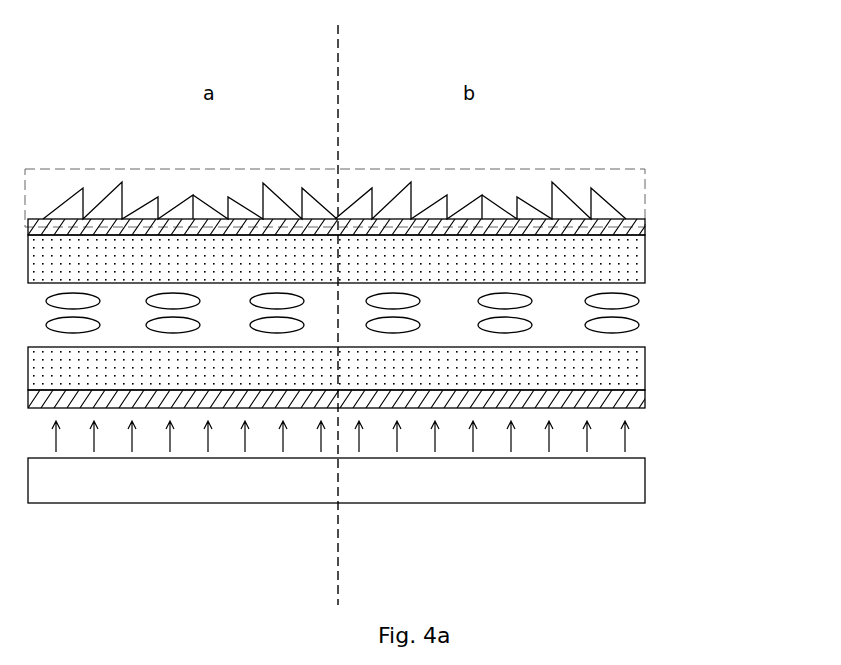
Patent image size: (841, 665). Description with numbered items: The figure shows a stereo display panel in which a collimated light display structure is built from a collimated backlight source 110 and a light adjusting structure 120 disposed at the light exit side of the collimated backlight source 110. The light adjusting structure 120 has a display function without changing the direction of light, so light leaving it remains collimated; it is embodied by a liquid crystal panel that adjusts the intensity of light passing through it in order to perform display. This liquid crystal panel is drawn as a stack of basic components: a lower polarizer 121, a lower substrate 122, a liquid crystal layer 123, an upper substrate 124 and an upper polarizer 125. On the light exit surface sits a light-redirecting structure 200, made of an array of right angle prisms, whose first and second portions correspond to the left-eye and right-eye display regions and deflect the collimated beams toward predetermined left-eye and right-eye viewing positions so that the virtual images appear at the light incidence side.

The light-redirecting structure 200 is at (647, 193).
The light adjusting structure 120 is at (733, 218).
The upper polarizer 125 is at (647, 228).
The upper substrate 124 is at (647, 260).
The liquid crystal layer 123 is at (645, 313).
The lower substrate 122 is at (647, 367).
The lower polarizer 121 is at (647, 399).
The collimated backlight source 110 is at (647, 482).